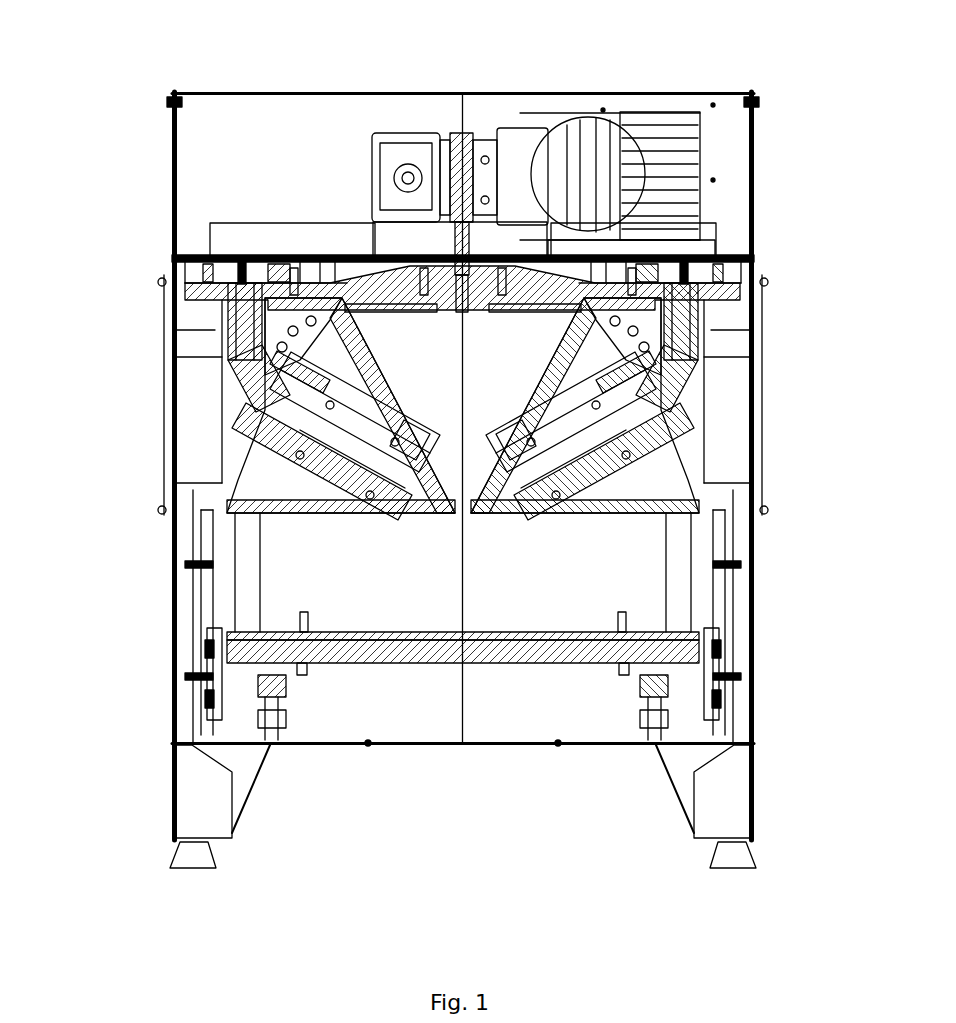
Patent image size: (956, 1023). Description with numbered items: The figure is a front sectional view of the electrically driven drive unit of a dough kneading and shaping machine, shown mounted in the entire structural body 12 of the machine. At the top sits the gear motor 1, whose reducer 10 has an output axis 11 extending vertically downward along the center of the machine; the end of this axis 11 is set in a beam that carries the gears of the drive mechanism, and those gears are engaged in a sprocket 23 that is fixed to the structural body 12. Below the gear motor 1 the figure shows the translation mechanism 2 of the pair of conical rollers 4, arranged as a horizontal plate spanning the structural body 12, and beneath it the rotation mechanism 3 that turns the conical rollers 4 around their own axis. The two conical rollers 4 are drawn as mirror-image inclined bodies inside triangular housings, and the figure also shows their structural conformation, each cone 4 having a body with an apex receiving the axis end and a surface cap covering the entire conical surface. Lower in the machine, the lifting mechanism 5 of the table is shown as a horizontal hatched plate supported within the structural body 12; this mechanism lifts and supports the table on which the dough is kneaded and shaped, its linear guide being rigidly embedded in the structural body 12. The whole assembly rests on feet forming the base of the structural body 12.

The gear motor 1 is at (690, 180).
The translation mechanism 2 is at (745, 258).
The rotation mechanism 3 is at (677, 430).
The conical roller 4 is at (615, 515).
The lifting mechanism 5 is at (705, 648).
The reducer 10 is at (372, 150).
The axis 11 is at (458, 130).
The structural body 12 is at (208, 232).
The sprocket 23 is at (320, 250).